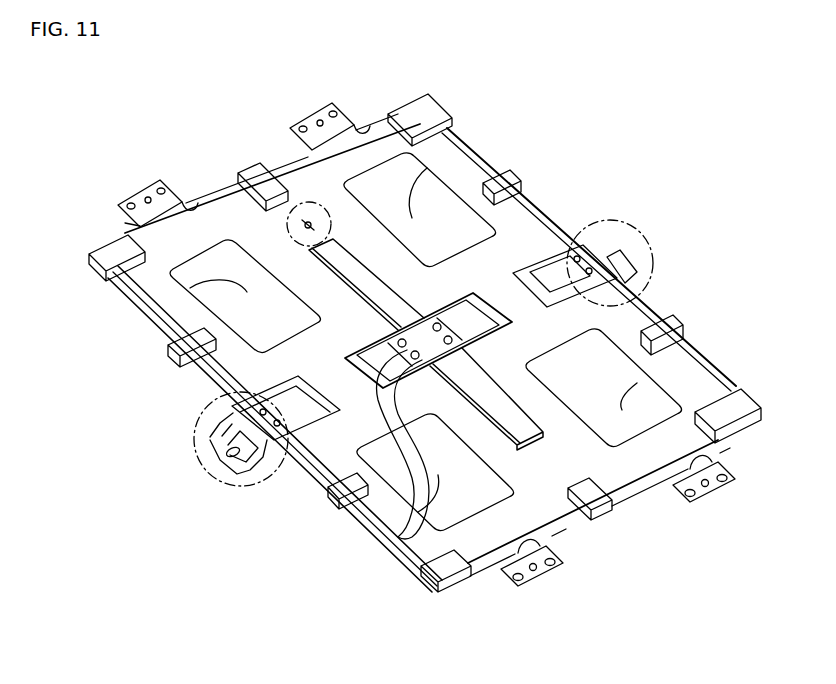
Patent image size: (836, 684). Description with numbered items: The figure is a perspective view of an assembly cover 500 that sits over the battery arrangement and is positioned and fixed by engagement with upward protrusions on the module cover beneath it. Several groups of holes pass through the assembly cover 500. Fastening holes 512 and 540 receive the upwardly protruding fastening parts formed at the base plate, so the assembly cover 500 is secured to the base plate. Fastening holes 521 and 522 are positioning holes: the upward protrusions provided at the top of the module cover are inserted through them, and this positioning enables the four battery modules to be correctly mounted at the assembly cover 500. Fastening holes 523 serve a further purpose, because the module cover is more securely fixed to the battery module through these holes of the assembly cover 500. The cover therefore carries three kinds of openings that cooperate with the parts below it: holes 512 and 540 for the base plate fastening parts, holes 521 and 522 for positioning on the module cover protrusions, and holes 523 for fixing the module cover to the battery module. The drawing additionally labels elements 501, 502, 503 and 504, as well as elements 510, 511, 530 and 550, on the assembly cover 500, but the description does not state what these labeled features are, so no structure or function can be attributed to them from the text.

The assembly cover 500 is at (80, 115).
The first opening 501 is at (190, 288).
The second opening 502 is at (438, 475).
The third opening 503 is at (637, 383).
The fourth opening 504 is at (427, 168).
The bracket 510 is at (637, 230).
The slot 511 is at (228, 455).
The fastening hole 512 is at (278, 432).
The fastening hole for positioning 521 is at (527, 583).
The fastening hole for positioning 522 is at (552, 564).
The fastening hole 523 is at (536, 571).
The clip 530 is at (262, 180).
The fastening hole 540 is at (403, 492).
The fastener 550 is at (285, 241).